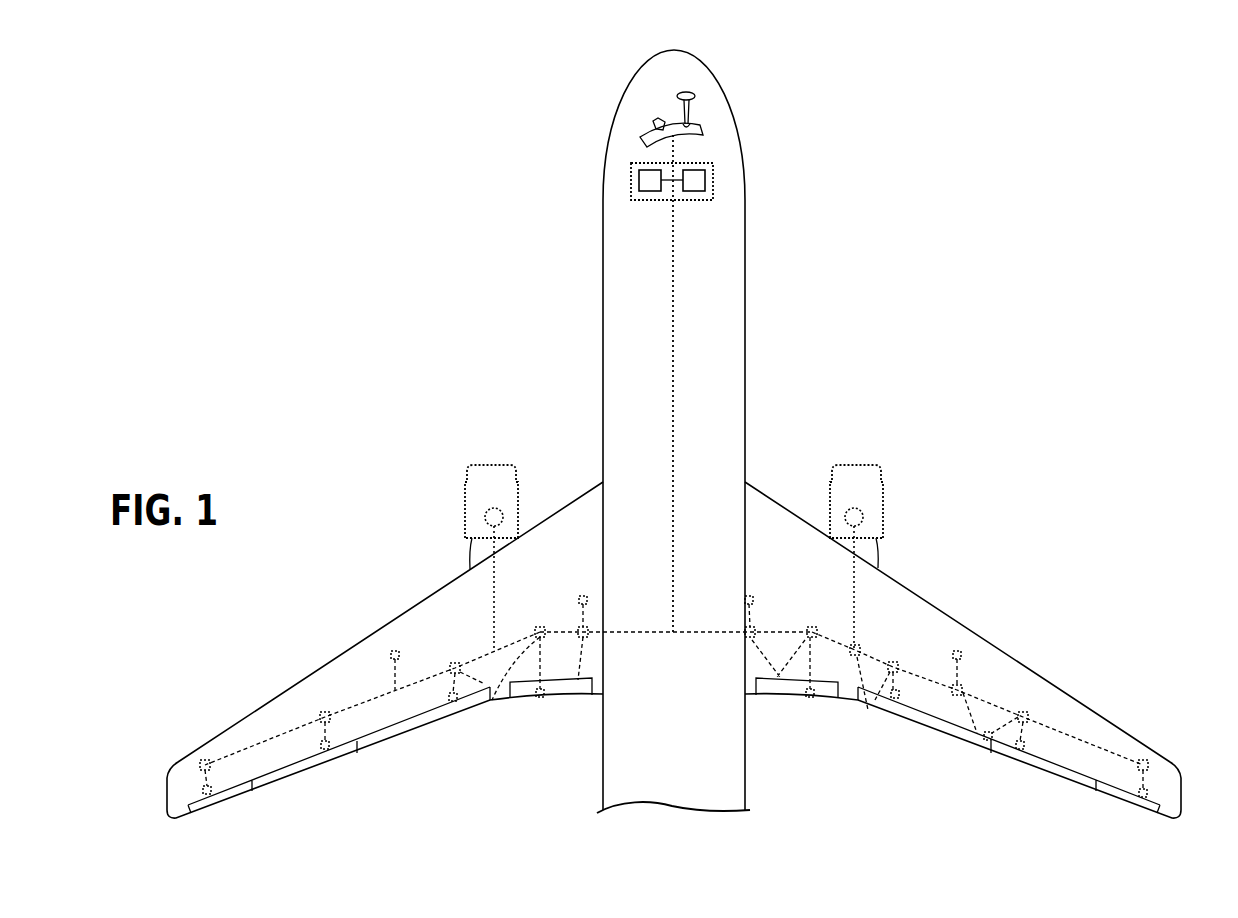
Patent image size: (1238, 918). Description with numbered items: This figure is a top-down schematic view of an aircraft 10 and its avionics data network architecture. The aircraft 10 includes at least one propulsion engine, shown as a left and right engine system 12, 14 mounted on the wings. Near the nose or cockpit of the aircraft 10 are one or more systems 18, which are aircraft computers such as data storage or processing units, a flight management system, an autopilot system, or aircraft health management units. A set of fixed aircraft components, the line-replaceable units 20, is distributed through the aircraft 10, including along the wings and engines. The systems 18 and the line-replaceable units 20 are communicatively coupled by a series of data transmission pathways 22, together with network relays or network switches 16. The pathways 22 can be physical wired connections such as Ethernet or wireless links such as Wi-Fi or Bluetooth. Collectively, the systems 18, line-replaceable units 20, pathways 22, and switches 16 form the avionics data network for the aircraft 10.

The aircraft 10 is at (488, 83).
The engine system 12 is at (492, 472).
The right engine 14 is at (866, 474).
The network switch 16 is at (215, 806).
The system 18 is at (642, 193).
The line-replaceable unit 20 is at (505, 510).
The data transmission pathway 22 is at (672, 362).